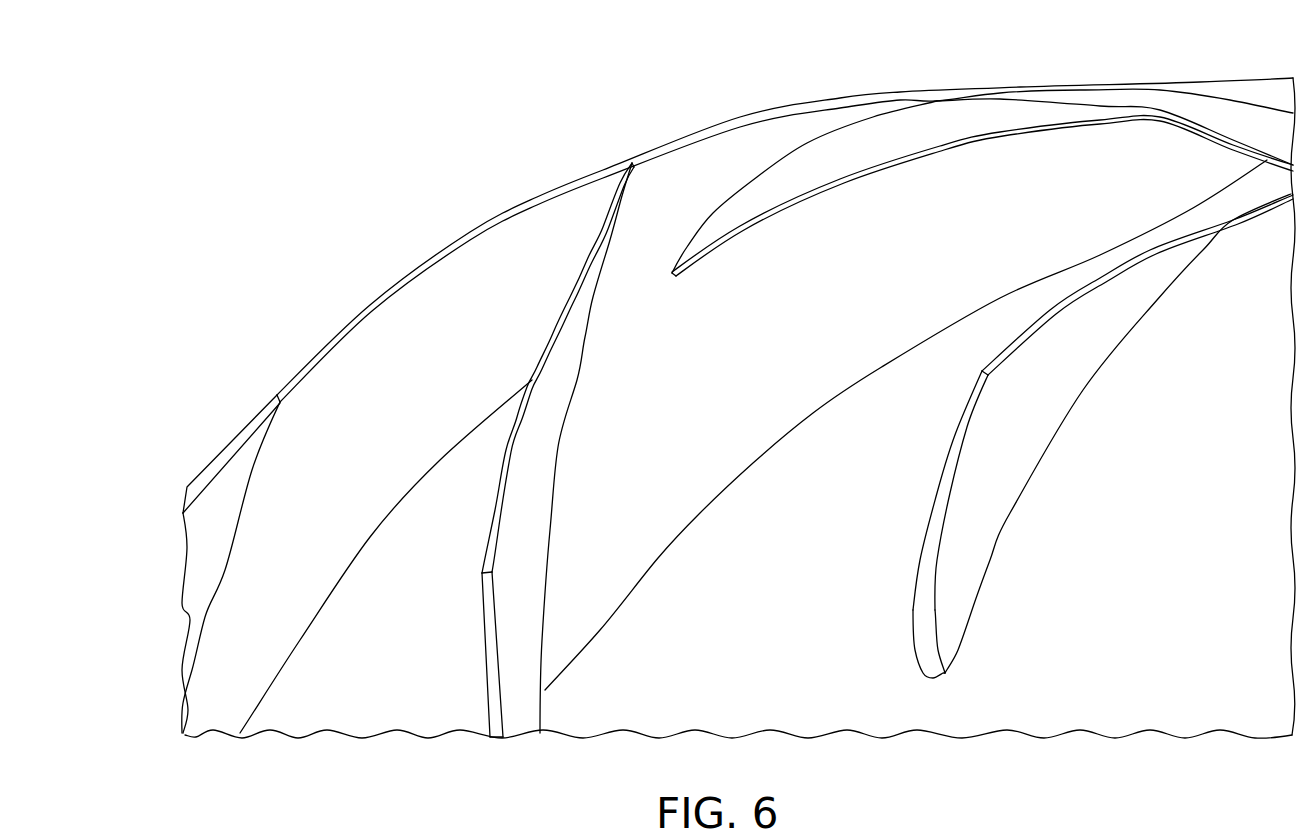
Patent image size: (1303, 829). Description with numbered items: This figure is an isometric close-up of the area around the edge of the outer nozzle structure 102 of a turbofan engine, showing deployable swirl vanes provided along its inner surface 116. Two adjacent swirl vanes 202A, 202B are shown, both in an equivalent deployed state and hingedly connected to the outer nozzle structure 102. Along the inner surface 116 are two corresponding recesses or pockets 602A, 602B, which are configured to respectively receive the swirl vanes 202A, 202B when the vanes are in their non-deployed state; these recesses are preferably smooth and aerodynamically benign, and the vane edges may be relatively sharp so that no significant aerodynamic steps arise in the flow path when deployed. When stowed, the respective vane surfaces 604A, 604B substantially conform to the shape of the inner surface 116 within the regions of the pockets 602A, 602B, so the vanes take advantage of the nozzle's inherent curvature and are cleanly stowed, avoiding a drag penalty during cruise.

The outer nozzle structure 102 is at (312, 292).
The inner surface 116 is at (358, 702).
The swirl vane 202A is at (532, 528).
The swirl vane 202B is at (991, 481).
The recess 602A is at (224, 632).
The recess 602B is at (960, 162).
The surface 604A is at (527, 680).
The surface 604B is at (953, 605).